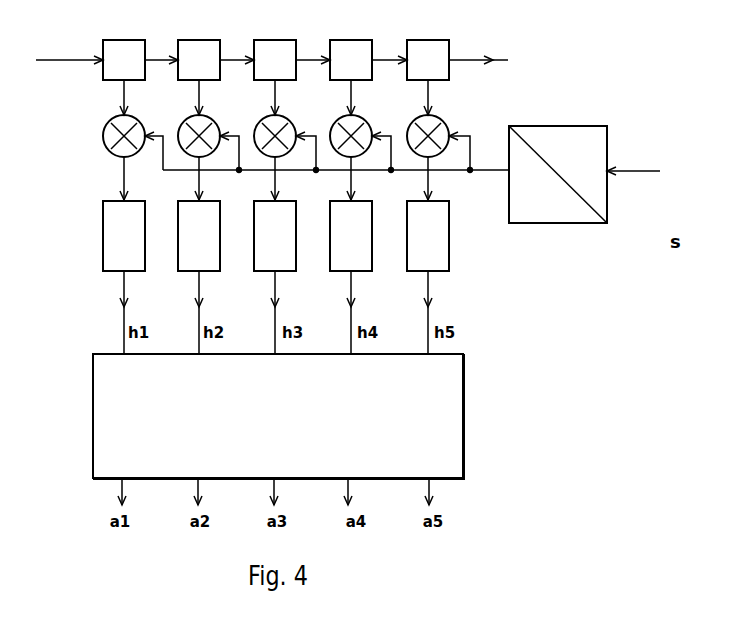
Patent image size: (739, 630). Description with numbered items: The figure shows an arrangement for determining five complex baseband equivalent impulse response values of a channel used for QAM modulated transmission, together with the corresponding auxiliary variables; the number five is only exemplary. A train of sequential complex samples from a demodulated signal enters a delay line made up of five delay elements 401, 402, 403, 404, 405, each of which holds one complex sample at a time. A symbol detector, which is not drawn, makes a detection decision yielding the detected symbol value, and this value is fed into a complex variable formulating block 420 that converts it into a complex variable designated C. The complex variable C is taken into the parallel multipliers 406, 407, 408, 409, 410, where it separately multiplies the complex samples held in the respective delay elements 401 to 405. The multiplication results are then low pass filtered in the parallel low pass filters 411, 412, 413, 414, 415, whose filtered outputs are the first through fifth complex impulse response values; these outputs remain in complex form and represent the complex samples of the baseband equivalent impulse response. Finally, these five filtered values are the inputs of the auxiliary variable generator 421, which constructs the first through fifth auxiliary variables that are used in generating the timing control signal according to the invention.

The delay element 401 is at (120, 40).
The delay element 402 is at (195, 40).
The delay element 403 is at (271, 40).
The delay element 404 is at (347, 40).
The delay element 405 is at (424, 40).
The parallel multiplier 406 is at (115, 121).
The parallel multiplier 407 is at (190, 121).
The parallel multiplier 408 is at (266, 121).
The parallel multiplier 409 is at (342, 121).
The parallel multiplier 410 is at (419, 121).
The parallel low pass filter 411 is at (112, 276).
The parallel low pass filter 412 is at (187, 276).
The parallel low pass filter 413 is at (263, 276).
The parallel low pass filter 414 is at (339, 276).
The parallel low pass filter 415 is at (416, 276).
The complex variable formulating block 420 is at (524, 126).
The auxiliary variable generator 421 is at (93, 354).